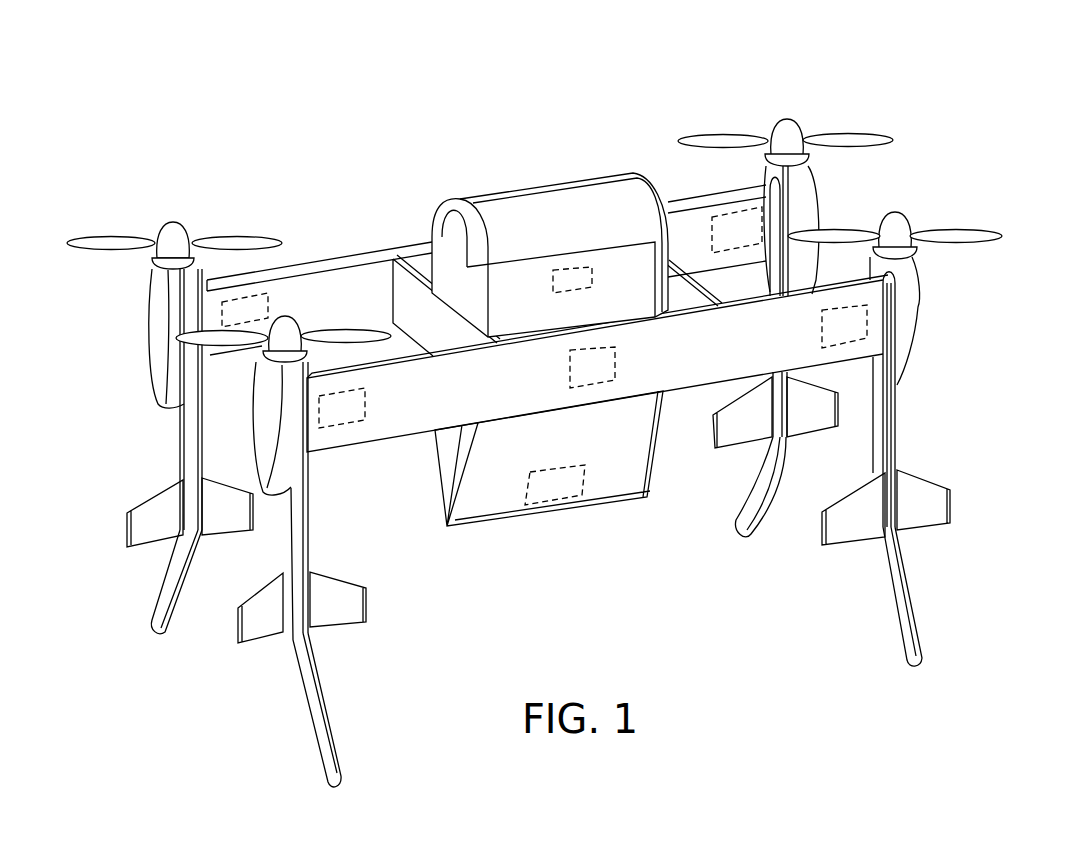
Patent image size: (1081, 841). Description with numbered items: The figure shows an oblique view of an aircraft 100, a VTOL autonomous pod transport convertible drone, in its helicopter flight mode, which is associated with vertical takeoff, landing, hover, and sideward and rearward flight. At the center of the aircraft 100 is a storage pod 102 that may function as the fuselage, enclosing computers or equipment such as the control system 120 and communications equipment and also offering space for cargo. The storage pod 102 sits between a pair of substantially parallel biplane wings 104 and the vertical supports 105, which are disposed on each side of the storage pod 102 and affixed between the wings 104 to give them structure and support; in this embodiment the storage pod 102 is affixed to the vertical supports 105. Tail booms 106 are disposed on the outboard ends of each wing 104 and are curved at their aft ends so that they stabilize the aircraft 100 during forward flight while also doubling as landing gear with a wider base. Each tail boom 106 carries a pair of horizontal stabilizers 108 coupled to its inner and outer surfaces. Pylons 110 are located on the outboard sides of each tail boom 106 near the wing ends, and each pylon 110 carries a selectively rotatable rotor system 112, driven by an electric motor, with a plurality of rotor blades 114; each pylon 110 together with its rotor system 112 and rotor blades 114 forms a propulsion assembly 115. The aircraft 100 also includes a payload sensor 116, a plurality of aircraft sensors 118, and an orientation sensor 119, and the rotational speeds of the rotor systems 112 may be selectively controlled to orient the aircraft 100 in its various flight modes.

The aircraft 100 is at (398, 110).
The storage pod 102 is at (529, 188).
The biplane wings 104 is at (404, 230).
The vertical supports 105 is at (462, 338).
The tail booms 106 is at (157, 615).
The horizontal stabilizers 108 is at (143, 537).
The pylons 110 is at (160, 331).
The rotor system 112 is at (172, 220).
The rotor blades 114 is at (86, 238).
The propulsion assembly 115 is at (553, 209).
The payload sensor 116 is at (572, 265).
The aircraft sensors 118 is at (222, 304).
The orientation sensor 119 is at (633, 391).
The control system 120 is at (543, 505).